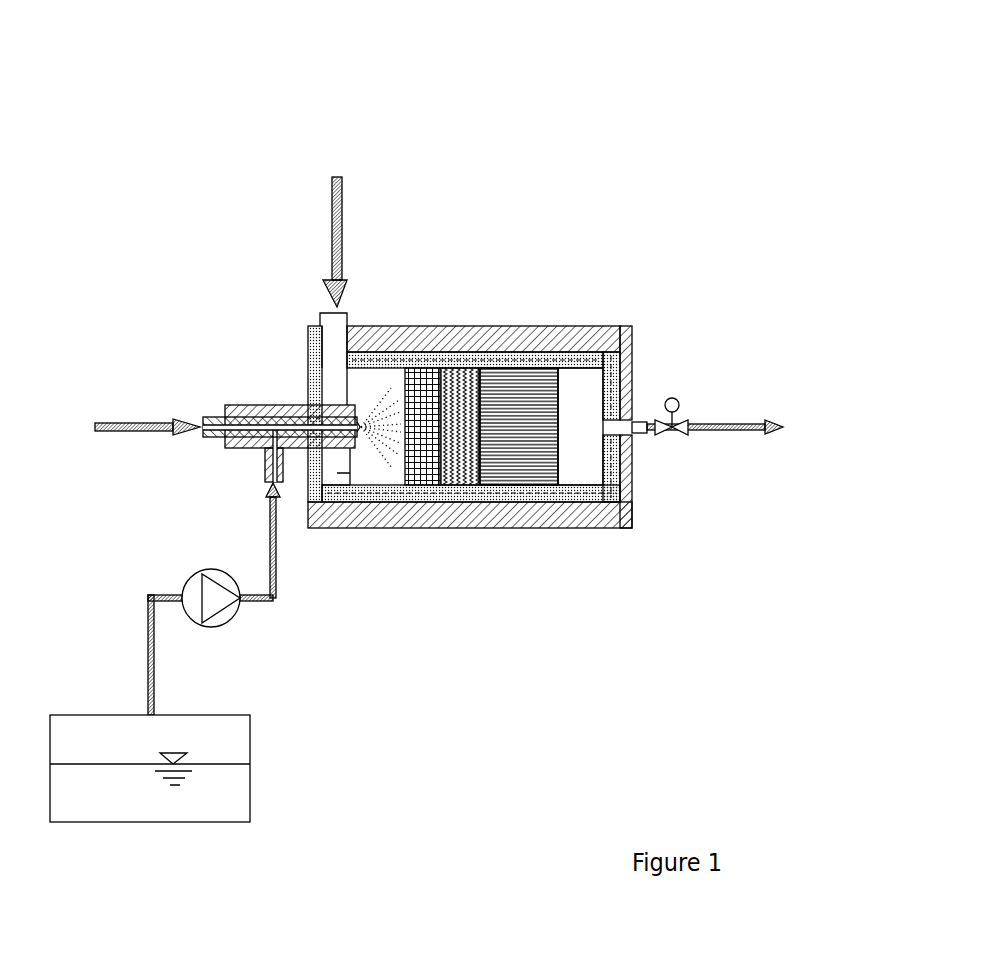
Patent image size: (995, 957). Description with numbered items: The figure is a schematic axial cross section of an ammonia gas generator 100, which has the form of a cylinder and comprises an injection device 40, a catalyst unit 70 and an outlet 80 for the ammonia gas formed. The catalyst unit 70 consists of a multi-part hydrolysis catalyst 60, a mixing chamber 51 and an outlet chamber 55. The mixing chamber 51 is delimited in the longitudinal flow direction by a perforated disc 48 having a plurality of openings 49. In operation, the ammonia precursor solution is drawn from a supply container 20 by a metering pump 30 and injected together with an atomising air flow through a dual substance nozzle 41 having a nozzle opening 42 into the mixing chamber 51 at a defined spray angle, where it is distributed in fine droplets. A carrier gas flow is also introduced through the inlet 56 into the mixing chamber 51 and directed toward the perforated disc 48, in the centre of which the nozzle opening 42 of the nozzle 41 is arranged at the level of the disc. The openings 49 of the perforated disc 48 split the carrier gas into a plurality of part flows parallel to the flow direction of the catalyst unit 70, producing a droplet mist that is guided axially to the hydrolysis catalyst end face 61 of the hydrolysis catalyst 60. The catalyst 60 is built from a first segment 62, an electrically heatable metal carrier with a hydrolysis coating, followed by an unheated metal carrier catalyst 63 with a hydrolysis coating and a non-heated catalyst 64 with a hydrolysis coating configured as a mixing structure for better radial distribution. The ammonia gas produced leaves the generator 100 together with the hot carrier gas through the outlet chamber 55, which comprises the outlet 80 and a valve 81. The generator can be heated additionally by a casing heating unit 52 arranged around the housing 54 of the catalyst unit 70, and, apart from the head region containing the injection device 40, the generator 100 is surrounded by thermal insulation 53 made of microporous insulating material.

The ammonia gas generator 100 is at (427, 454).
The catalyst unit 70 is at (500, 302).
The casing heating unit 52 is at (478, 327).
The thermal insulation 53 is at (598, 327).
The housing 54 is at (633, 333).
The outlet chamber 55 is at (585, 410).
The inlet 56 is at (340, 313).
The mixing chamber 51 is at (347, 387).
The openings 49 is at (350, 473).
The perforated disc 48 is at (298, 402).
The dual substance nozzle 41 is at (287, 402).
The injection device 40 is at (355, 418).
The nozzle opening 42 is at (360, 423).
The hydrolysis catalyst 60 is at (507, 551).
The hydrolysis catalyst end face 61 is at (400, 428).
The first segment 62 is at (425, 428).
The unheated metal carrier catalyst 63 is at (458, 430).
The non-heated catalyst 64 is at (523, 437).
The outlet 80 is at (632, 462).
The valve 81 is at (670, 437).
The metering pump 30 is at (211, 627).
The supply container 20 is at (150, 822).